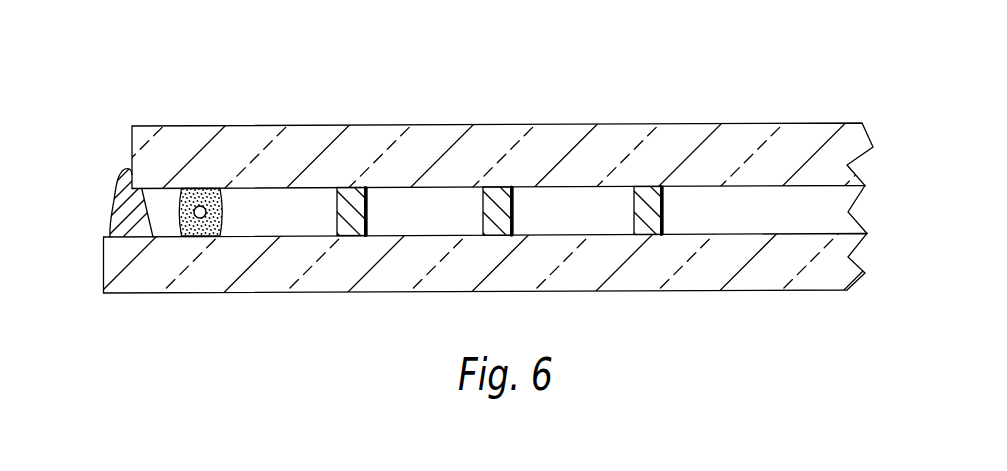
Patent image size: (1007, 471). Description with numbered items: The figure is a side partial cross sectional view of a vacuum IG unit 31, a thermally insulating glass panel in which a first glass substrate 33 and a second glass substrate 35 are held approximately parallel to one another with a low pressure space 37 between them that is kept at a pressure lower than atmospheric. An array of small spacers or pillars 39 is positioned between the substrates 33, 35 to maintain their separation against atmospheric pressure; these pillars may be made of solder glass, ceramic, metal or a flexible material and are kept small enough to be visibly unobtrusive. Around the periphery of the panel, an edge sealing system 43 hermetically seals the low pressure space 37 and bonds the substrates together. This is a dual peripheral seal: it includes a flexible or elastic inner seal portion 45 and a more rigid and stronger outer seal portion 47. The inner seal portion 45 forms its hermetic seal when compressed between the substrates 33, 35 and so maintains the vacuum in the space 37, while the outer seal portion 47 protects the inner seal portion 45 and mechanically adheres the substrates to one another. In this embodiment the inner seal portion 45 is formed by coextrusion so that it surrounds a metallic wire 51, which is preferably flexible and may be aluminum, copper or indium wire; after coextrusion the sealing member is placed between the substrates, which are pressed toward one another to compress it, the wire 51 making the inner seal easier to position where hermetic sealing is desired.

The vacuum IG unit 31 is at (693, 76).
The first glass substrate 33 is at (389, 278).
The second glass substrate 35 is at (305, 140).
The low pressure space 37 is at (823, 205).
The spacers/pillars 39 is at (367, 212).
The edge sealing system 43 is at (78, 176).
The inner seal portion 45 is at (207, 211).
The outer seal portion 47 is at (112, 214).
The metallic wire 51 is at (181, 210).